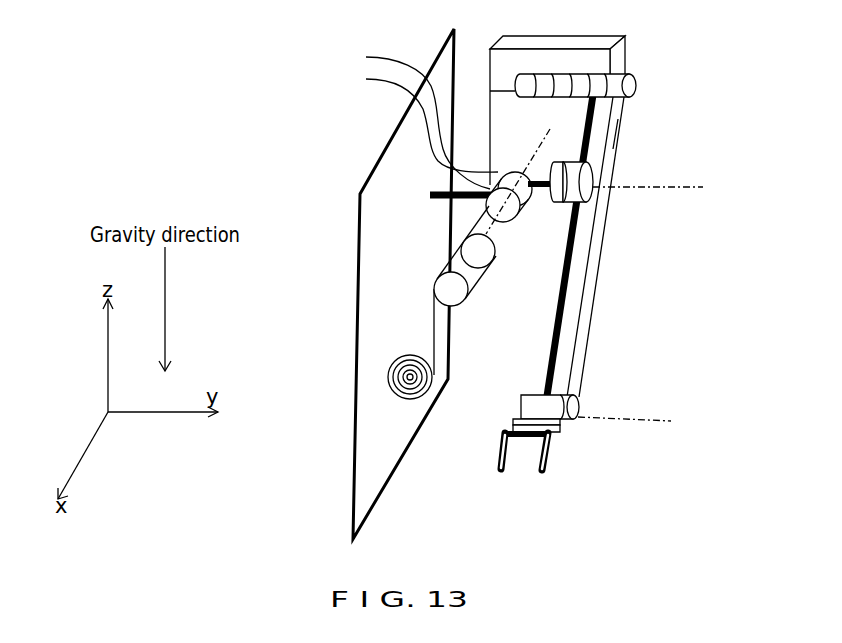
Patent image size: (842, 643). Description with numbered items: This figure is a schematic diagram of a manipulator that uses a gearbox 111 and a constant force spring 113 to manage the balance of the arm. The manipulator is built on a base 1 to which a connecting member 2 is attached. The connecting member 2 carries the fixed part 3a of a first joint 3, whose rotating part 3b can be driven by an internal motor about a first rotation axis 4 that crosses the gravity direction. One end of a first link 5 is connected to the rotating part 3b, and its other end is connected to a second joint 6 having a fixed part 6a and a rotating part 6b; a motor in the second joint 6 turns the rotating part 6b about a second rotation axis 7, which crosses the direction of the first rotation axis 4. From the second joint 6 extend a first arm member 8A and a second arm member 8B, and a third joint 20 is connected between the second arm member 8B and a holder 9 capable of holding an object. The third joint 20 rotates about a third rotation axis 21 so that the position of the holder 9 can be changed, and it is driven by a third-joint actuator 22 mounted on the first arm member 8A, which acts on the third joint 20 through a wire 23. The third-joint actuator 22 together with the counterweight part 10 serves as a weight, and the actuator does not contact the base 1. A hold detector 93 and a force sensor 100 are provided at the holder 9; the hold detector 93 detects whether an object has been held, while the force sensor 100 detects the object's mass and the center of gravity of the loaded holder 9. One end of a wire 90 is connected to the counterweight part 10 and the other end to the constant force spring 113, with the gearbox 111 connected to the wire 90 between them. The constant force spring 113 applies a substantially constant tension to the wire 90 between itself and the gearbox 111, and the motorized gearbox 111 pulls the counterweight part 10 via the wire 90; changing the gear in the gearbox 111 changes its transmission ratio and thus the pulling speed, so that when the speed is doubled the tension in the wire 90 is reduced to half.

The base 1 is at (384, 181).
The connecting member 2 is at (430, 203).
The first joint 3 is at (403, 117).
The fixed part 3a is at (333, 48).
The rotating part 3b is at (412, 117).
The first rotation axis 4 is at (482, 218).
The first link 5 is at (542, 190).
The second joint 6 is at (636, 167).
The fixed part 6a is at (588, 167).
The rotating part 6b is at (593, 182).
The second rotation axis 7 is at (705, 189).
The first arm member 8A is at (600, 138).
The second arm member 8B is at (597, 243).
The holder 9 is at (560, 470).
The counterweight part 10 is at (635, 57).
The third joint 20 is at (584, 401).
The third rotation axis 21 is at (673, 422).
The third-joint actuator 22 is at (643, 88).
The wire 23 is at (613, 227).
The wire 90 is at (491, 92).
The hold detector 93 is at (563, 420).
The force sensor 100 is at (567, 434).
The gearbox 111 is at (434, 288).
The constant force spring 113 is at (393, 392).